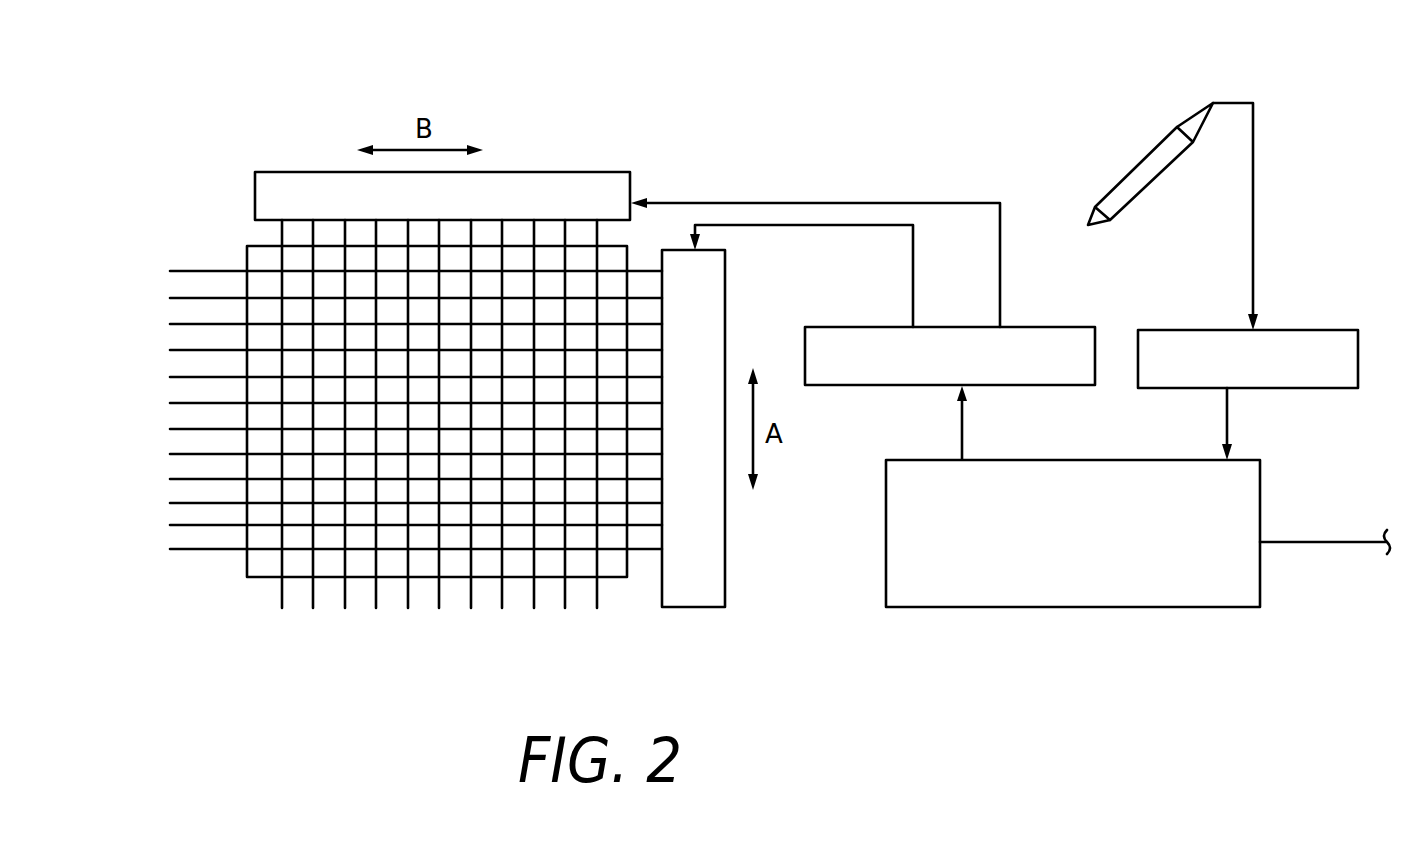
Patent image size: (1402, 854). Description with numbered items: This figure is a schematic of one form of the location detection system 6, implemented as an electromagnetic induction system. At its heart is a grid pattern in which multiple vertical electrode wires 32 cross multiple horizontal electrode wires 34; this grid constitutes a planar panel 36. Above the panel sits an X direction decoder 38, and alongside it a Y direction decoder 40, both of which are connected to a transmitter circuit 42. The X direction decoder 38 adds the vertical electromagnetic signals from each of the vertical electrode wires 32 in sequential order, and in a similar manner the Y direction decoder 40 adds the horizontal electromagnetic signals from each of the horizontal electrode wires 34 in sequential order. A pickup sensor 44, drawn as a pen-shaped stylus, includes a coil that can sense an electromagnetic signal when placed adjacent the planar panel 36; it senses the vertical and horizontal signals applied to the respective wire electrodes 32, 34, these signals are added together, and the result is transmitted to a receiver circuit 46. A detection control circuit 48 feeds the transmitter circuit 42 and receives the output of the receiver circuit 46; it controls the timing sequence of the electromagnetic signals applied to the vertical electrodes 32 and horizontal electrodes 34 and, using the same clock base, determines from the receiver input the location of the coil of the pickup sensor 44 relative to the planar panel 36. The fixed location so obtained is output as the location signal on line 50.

The location detection system 6 is at (384, 105).
The vertical electrode wires 32 is at (600, 619).
The horizontal electrode wires 34 is at (160, 232).
The planar panel 36 is at (230, 222).
The X direction decoder 38 is at (555, 172).
The Y direction decoder 40 is at (725, 535).
The transmitter circuit 42 is at (1027, 327).
The pickup sensor 44 is at (1126, 175).
The receiver circuit 46 is at (1300, 330).
The detection control circuit 48 is at (1117, 608).
The line 50 is at (1318, 542).